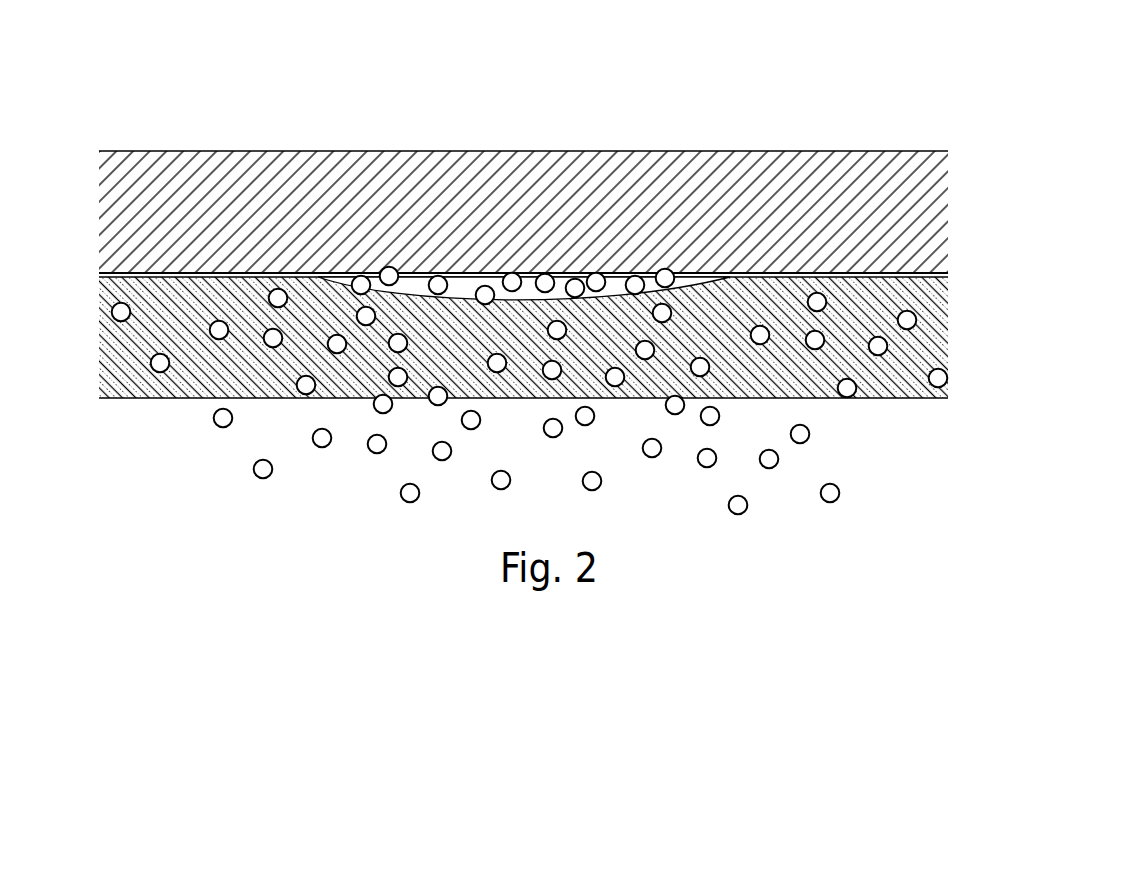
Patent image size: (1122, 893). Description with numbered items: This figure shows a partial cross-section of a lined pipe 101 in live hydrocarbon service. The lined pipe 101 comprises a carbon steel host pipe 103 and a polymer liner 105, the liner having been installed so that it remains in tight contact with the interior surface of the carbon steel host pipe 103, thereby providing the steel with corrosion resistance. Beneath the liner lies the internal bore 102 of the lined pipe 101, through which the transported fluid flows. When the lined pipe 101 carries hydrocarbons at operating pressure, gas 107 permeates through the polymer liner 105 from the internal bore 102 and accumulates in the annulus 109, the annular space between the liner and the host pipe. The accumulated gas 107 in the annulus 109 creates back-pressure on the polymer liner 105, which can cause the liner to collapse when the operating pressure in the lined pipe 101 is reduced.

The lined pipe 101 is at (918, 99).
The internal bore 102 is at (942, 449).
The carbon steel host pipe 103 is at (932, 175).
The polymer liner 105 is at (933, 305).
The gas 107 is at (676, 287).
The annulus 109 is at (462, 285).